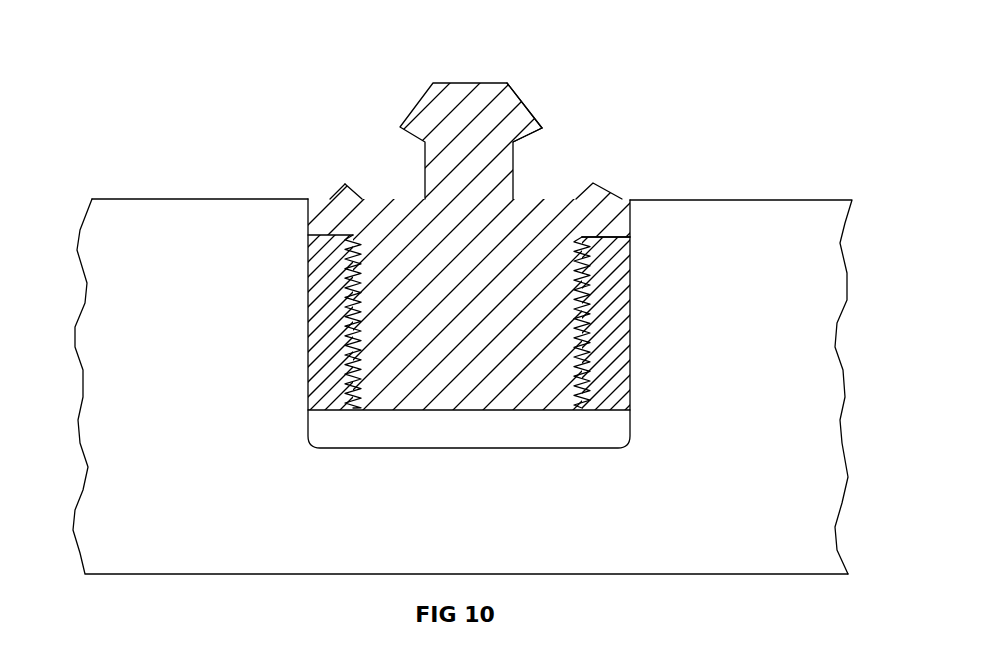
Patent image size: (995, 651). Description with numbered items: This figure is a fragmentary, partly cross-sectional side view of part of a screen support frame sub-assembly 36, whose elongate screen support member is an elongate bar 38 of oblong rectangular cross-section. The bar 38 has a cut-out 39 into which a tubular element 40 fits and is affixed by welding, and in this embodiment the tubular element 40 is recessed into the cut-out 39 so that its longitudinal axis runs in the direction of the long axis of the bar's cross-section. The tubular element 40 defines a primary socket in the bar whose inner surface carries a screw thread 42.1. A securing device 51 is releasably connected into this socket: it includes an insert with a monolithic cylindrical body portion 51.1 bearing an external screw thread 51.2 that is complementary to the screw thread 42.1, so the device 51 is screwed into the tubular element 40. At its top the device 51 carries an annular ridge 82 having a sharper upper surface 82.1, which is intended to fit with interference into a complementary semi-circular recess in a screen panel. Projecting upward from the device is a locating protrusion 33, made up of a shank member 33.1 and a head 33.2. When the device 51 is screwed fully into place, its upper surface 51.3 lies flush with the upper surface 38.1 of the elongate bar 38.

The locating protrusion 33 is at (396, 145).
The shank member 33.1 is at (517, 167).
The head 33.2 is at (503, 110).
The screen support frame sub-assembly 36 is at (196, 185).
The elongate bar 38 is at (140, 225).
The upper surface of the elongate bar 38.1 is at (755, 186).
The cut-out 39 is at (390, 461).
The tubular element 40 is at (307, 340).
The screw thread 42.1 is at (330, 304).
The securing device 51 is at (635, 96).
The monolithic cylindrical body portion 51.1 is at (537, 320).
The external screw thread 51.2 is at (587, 267).
The upper surface of the device 51.3 is at (627, 185).
The annular ridge 82 is at (340, 187).
The sharper upper surface 82.1 is at (335, 169).